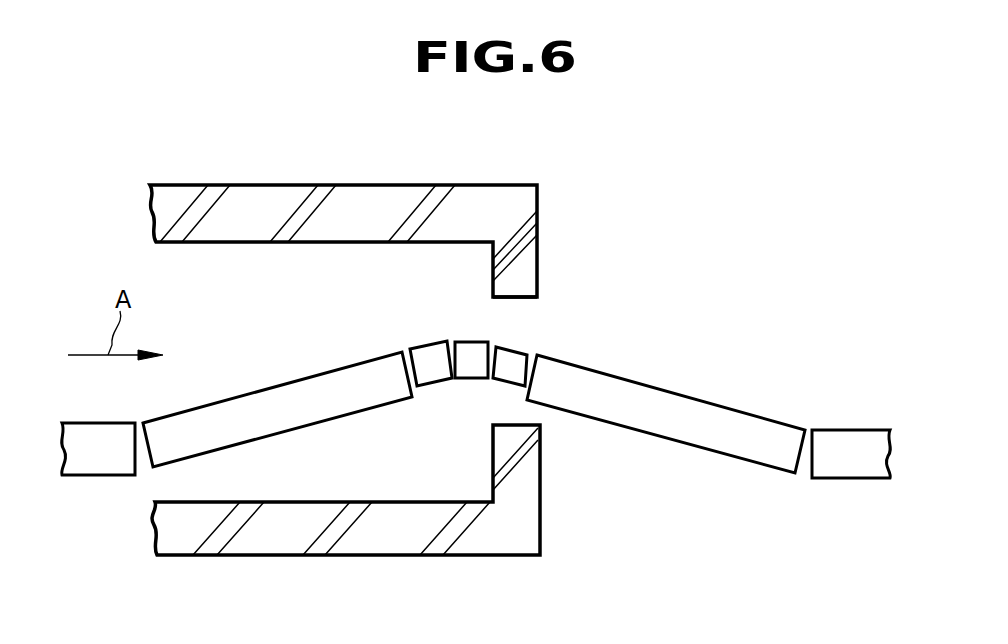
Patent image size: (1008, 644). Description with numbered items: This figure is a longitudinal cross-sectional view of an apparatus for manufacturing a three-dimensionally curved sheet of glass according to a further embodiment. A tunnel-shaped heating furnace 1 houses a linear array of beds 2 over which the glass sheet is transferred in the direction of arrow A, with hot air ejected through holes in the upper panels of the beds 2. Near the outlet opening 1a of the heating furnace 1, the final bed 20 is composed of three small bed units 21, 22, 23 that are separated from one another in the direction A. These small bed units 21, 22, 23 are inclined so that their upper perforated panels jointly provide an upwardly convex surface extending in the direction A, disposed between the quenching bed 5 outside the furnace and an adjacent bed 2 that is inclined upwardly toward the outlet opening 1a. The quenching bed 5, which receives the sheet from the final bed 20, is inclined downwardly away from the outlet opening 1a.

The heating furnace 1 is at (300, 195).
The outlet opening 1a is at (523, 298).
The bed 2 is at (103, 460).
The quenching bed 5 is at (692, 430).
The final bed 20 is at (439, 334).
The small bed unit 21 is at (432, 366).
The small bed unit 22 is at (473, 368).
The small bed unit 23 is at (513, 361).